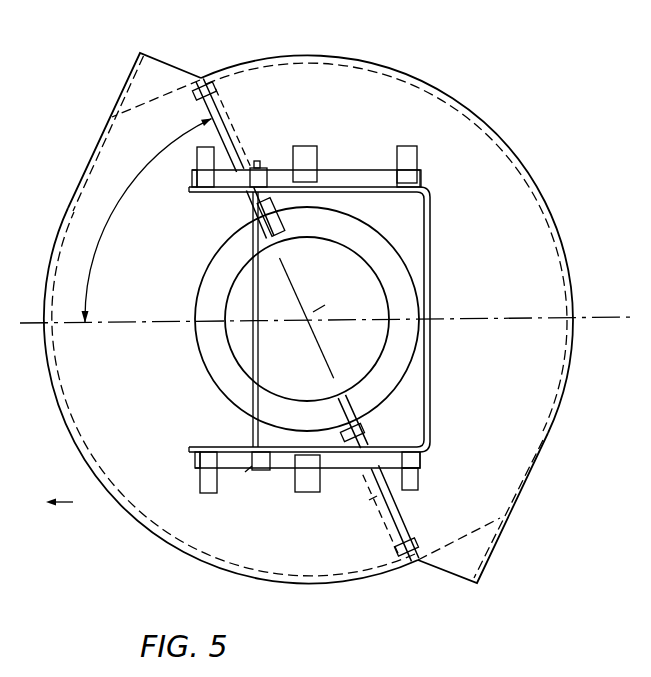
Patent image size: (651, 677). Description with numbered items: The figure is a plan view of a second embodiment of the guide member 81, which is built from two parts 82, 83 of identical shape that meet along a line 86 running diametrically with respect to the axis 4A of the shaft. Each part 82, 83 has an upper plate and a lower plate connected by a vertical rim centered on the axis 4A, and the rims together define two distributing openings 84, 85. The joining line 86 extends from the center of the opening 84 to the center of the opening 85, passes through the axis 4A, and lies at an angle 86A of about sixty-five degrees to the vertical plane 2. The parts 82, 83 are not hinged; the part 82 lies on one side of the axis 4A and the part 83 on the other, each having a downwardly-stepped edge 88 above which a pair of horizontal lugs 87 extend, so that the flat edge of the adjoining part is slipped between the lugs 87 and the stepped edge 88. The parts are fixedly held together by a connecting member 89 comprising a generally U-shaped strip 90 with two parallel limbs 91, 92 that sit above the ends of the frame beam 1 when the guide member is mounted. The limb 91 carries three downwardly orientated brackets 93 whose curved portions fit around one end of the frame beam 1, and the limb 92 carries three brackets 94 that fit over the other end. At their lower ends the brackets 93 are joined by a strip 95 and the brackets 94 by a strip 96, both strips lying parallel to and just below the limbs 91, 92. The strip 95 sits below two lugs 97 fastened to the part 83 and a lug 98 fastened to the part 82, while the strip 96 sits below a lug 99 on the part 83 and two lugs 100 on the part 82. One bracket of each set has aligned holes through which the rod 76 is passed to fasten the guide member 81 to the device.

The frame beam 1 is at (59, 516).
The vertical plane 2 is at (327, 331).
The axis of the shaft 4A is at (333, 304).
The rod 76 is at (259, 373).
The guide member 81 is at (396, 62).
The part 82 is at (159, 549).
The part 83 is at (580, 456).
The distributing opening 84 is at (160, 61).
The distributing opening 85 is at (452, 574).
The line 86 is at (297, 297).
The angle 86A is at (90, 276).
The horizontal lug 87 is at (218, 88).
The downwardly-stepped edge 88 is at (234, 131).
The connecting member 89 is at (472, 266).
The U-shaped strip 90 is at (431, 387).
The limb 91 is at (230, 194).
The limb 92 is at (245, 447).
The bracket 93 is at (435, 163).
The bracket 94 is at (254, 470).
The strip 95 is at (360, 176).
The strip 96 is at (195, 457).
The lug 97 is at (308, 147).
The lug 98 is at (197, 160).
The lug 99 is at (418, 487).
The lug 100 is at (199, 490).